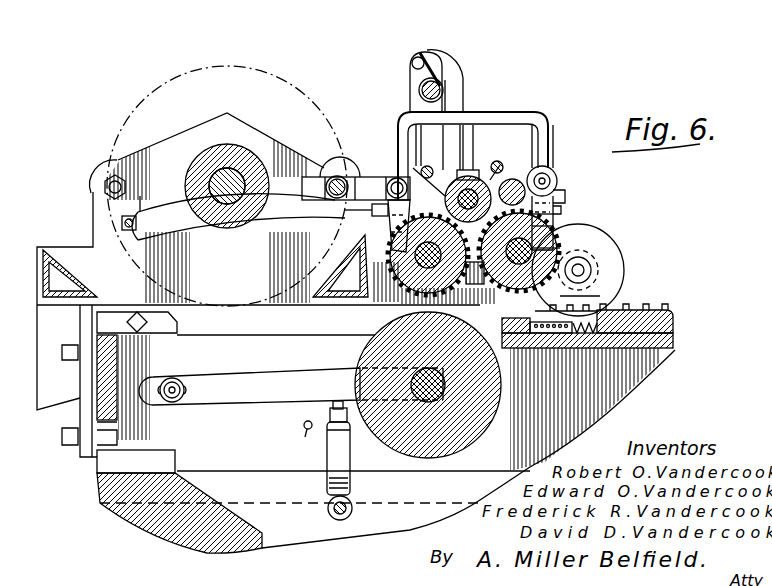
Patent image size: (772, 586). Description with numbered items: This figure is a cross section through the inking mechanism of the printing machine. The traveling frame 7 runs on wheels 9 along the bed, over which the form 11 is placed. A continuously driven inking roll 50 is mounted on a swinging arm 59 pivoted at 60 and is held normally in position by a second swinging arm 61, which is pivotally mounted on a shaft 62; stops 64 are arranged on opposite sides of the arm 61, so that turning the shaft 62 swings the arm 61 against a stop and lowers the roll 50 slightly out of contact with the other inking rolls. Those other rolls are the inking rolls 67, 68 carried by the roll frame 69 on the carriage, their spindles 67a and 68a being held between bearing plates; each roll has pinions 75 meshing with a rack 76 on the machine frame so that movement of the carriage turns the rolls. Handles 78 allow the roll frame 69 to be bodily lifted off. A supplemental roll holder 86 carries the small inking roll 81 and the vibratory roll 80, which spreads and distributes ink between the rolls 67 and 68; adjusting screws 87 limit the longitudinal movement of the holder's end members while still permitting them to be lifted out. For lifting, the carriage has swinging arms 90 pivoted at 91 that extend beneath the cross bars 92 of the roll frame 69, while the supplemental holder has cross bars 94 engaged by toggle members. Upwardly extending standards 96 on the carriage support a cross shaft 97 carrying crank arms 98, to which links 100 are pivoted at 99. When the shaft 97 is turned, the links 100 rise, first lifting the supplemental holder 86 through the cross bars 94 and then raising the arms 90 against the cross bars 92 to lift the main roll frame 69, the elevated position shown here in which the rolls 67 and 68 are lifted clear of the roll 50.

The traveling frame 7 is at (92, 196).
The pivot 91 is at (120, 222).
The standards 96 is at (180, 205).
The swinging arms 90 is at (296, 224).
The adjusting screws 87 is at (372, 210).
The cross bars 92 is at (396, 177).
The inking roll 81 is at (550, 171).
The cross bars 94 is at (426, 166).
The pivot 99 is at (420, 57).
The crank arms 98 is at (441, 70).
The cross shaft 97 is at (450, 83).
The links 100 is at (466, 80).
The handles 78 is at (507, 113).
The supplemental roll holder 86 is at (482, 170).
The vibratory roll 80 is at (472, 177).
The roll frame 69 is at (553, 214).
The spindle 68a is at (560, 226).
The pinions 75 is at (565, 248).
The wheels 9 is at (612, 268).
The inking roll 68 is at (600, 294).
The rack 76 is at (668, 311).
The form 11 is at (674, 327).
The spindle 67a is at (423, 262).
The inking roll 67 is at (452, 290).
The inking roll 50 is at (496, 412).
The swinging arm 59 is at (249, 386).
The pivot 60 is at (176, 385).
The stops 64 is at (357, 432).
The second swinging arm 61 is at (349, 465).
The shaft 62 is at (353, 503).